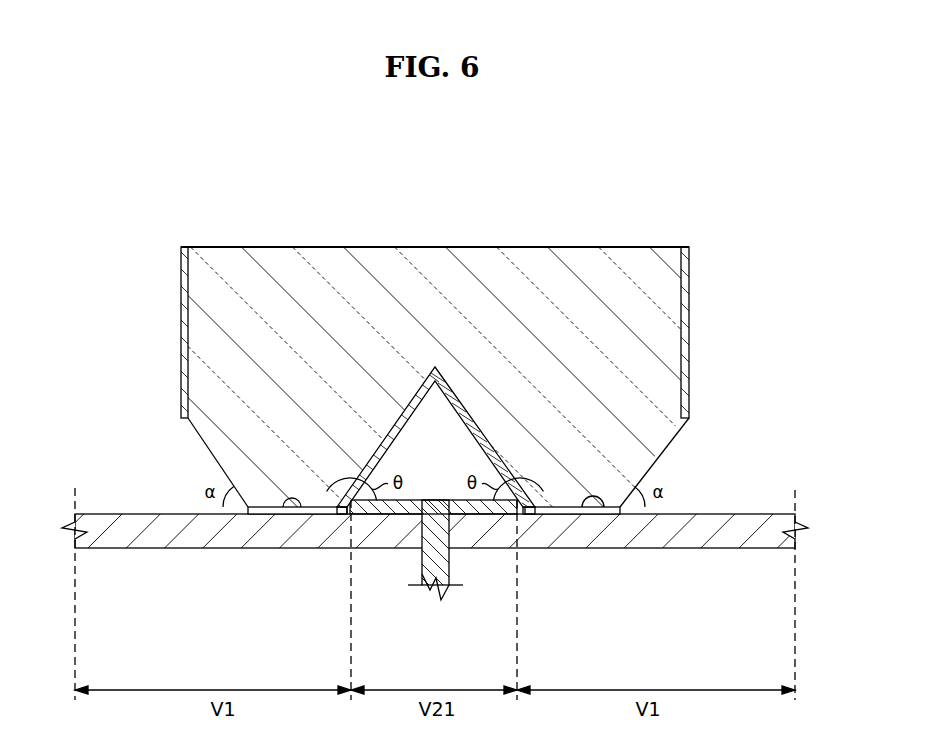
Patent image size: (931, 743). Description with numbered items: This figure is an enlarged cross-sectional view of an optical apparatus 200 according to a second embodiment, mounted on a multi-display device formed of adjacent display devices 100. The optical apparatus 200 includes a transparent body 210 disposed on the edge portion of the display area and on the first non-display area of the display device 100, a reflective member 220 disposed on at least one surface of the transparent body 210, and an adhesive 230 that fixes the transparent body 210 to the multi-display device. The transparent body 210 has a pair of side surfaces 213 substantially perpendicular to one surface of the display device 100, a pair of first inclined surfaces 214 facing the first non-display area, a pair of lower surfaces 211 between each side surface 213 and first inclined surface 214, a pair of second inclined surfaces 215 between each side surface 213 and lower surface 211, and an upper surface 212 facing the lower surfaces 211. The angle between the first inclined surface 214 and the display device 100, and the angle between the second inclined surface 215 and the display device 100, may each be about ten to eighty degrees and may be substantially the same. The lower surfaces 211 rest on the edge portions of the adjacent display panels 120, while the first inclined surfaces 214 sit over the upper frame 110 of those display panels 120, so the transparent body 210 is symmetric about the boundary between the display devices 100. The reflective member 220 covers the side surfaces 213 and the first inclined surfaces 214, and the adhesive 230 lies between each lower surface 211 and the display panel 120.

The display device 100 is at (423, 542).
The upper frame 110 is at (422, 558).
The display panel 120 is at (197, 537).
The optical apparatus 200 is at (474, 372).
The transparent body 210 is at (617, 342).
The lower surface 211 is at (300, 514).
The upper surface 212 is at (276, 247).
The side surface 213 is at (188, 300).
The first inclined surface 214 is at (353, 503).
The second inclined surface 215 is at (208, 452).
The reflective member 220 is at (395, 430).
The adhesive 230 is at (265, 514).